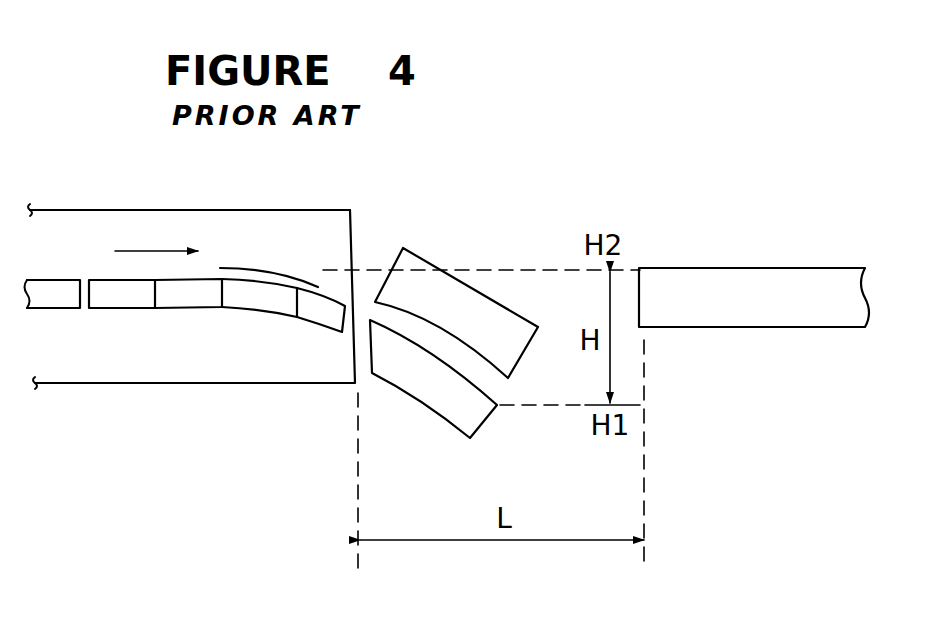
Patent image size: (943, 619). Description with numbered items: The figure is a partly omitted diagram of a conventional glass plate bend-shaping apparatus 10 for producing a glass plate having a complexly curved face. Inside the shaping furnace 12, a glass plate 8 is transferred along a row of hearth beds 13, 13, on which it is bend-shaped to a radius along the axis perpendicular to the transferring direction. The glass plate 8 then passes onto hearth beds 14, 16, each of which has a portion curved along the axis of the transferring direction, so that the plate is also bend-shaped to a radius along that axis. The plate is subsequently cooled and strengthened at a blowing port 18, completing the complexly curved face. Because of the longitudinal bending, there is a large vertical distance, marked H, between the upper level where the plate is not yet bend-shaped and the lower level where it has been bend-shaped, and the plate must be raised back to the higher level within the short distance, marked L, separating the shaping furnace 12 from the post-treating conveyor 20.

The glass plate 8 is at (278, 275).
The bend-shaping apparatus 10 is at (378, 211).
The shaping furnace 12 is at (191, 222).
The hearth beds 13 is at (51, 296).
The hearth bed 14 is at (260, 297).
The hearth bed 16 is at (325, 312).
The blowing port 18 is at (423, 389).
The post-treating conveyor 20 is at (742, 278).